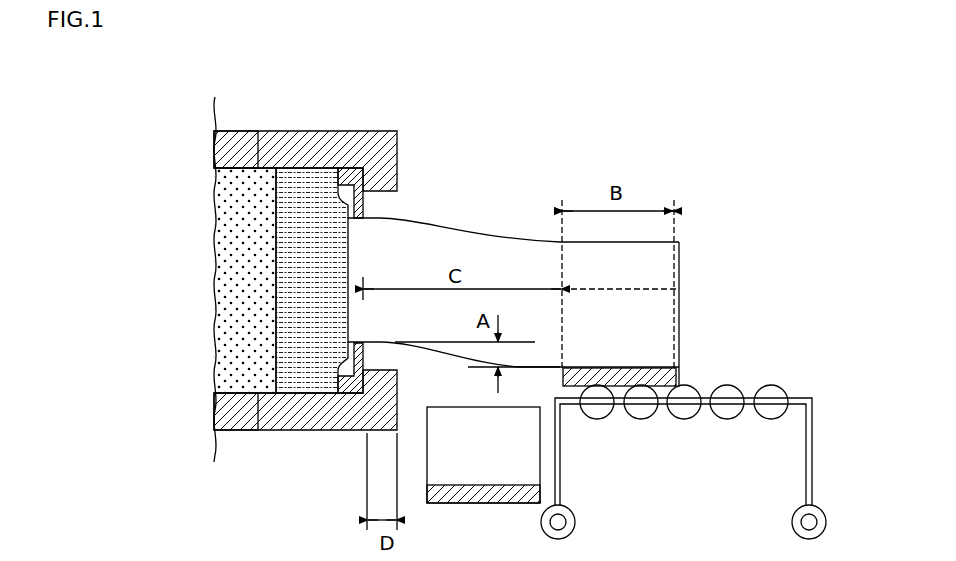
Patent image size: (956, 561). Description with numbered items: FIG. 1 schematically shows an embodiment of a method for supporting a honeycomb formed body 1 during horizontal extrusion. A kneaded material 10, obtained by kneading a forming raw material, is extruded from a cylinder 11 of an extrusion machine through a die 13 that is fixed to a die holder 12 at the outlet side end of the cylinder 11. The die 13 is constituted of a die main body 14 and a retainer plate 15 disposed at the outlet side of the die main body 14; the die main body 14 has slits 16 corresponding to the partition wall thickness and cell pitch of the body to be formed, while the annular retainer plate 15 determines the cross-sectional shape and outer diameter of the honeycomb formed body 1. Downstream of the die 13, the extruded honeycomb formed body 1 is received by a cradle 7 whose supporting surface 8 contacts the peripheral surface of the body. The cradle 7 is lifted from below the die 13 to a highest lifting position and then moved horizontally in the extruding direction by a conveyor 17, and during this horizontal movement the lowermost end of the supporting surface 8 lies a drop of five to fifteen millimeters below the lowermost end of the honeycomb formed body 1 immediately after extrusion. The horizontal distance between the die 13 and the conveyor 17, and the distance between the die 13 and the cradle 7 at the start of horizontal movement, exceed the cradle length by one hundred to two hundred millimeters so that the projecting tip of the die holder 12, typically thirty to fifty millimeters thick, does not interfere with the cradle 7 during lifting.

The honeycomb formed body 1 is at (452, 232).
The cradle 7 is at (680, 318).
The supporting surface 8 is at (634, 368).
The kneaded material 10 is at (246, 383).
The cylinder 11 is at (240, 148).
The die holder 12 is at (388, 156).
The die 13 is at (310, 79).
The die main body 14 is at (295, 190).
The retainer plate 15 is at (352, 170).
The slits 16 is at (333, 353).
The conveyor 17 is at (765, 388).